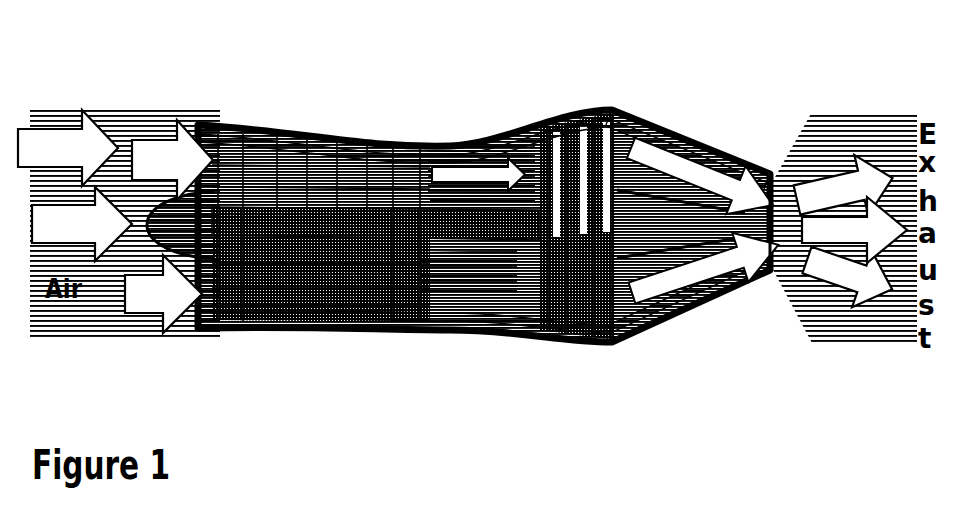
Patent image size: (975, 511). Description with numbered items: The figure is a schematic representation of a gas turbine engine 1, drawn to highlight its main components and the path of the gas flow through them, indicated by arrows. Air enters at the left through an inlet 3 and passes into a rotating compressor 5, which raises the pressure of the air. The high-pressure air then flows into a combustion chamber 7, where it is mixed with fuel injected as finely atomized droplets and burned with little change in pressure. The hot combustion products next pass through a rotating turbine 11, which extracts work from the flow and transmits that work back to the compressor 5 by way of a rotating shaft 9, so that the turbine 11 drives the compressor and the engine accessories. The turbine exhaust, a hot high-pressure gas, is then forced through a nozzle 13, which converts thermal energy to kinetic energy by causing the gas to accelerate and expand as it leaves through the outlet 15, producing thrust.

The gas turbine engine 1 is at (628, 364).
The inlet 3 is at (200, 313).
The compressor 5 is at (287, 147).
The combustion chamber 7 is at (452, 282).
The shaft 9 is at (497, 277).
The turbine 11 is at (558, 157).
The nozzle 13 is at (724, 167).
The outlet 15 is at (775, 268).